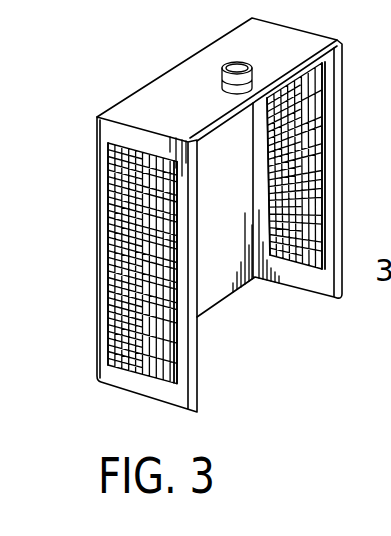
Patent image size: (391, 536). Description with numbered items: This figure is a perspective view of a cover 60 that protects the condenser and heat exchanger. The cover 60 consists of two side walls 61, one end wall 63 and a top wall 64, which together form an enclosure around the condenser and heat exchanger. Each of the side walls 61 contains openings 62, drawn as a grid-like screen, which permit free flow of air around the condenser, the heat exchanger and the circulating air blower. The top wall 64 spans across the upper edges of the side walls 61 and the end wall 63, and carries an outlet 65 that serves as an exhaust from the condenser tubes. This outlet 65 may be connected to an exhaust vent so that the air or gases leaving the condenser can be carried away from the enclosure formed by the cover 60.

The cover 60 is at (213, 209).
The side walls 61 is at (336, 169).
The openings 62 is at (124, 214).
The end wall 63 is at (212, 281).
The top wall 64 is at (153, 90).
The outlet 65 is at (223, 66).